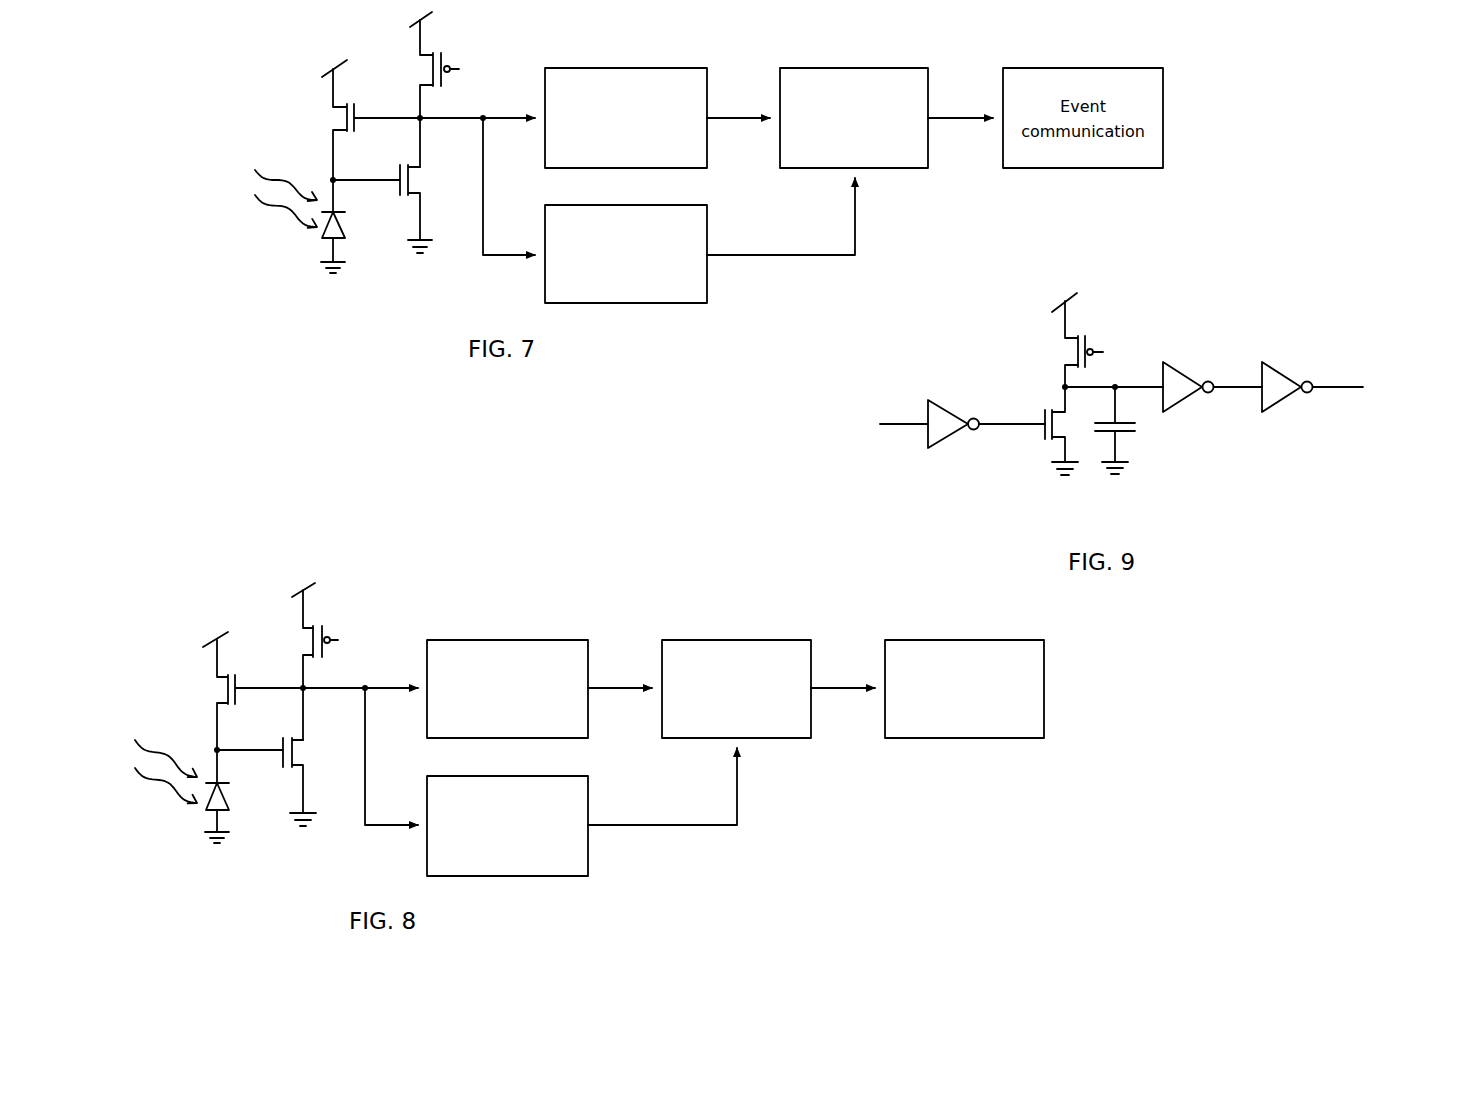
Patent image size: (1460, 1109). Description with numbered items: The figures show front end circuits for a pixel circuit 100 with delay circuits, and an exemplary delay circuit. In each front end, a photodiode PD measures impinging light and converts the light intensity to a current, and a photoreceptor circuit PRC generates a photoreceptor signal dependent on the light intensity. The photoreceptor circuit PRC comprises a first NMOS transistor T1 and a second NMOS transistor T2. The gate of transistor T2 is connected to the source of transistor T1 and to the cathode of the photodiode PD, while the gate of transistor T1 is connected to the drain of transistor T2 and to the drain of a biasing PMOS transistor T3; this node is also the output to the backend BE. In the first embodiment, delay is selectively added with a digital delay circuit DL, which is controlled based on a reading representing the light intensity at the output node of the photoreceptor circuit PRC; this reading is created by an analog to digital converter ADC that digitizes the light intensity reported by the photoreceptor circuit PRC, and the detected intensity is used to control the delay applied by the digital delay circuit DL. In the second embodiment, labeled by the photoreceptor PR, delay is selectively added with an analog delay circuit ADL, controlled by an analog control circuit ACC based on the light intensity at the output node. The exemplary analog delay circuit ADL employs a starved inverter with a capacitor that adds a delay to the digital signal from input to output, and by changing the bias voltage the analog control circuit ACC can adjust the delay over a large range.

In FIG. 7, the photoreceptor circuit PRC is at (298, 80).
In FIG. 7, the first NMOS transistor T1 is at (342, 118).
In FIG. 7, the second NMOS transistor T2 is at (430, 178).
In FIG. 7, the biasing PMOS transistor T3 is at (432, 77).
In FIG. 7, the photodiode PD is at (347, 230).
In FIG. 8, the photodiode PD is at (230, 800).
In FIG. 7, the backend BE is at (626, 118).
In FIG. 8, the backend BE is at (507, 689).
In FIG. 7, the digital delay circuit DL is at (854, 118).
In FIG. 7, the analog to digital converter ADC is at (626, 254).
In FIG. 8, the pixel circuit 100 is at (193, 632).
In FIG. 8, the photoreceptor PR is at (188, 729).
In FIG. 8, the analog delay circuit ADL is at (736, 689).
In FIG. 9, the analog delay circuit ADL is at (1018, 364).
In FIG. 8, the analog control circuit ACC is at (507, 826).